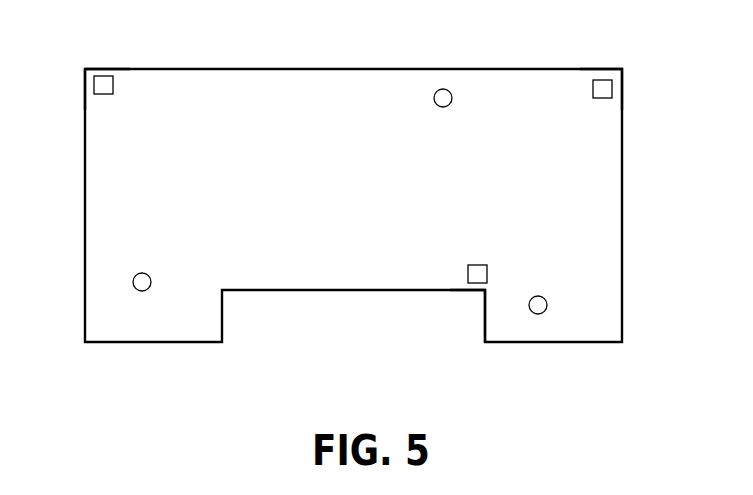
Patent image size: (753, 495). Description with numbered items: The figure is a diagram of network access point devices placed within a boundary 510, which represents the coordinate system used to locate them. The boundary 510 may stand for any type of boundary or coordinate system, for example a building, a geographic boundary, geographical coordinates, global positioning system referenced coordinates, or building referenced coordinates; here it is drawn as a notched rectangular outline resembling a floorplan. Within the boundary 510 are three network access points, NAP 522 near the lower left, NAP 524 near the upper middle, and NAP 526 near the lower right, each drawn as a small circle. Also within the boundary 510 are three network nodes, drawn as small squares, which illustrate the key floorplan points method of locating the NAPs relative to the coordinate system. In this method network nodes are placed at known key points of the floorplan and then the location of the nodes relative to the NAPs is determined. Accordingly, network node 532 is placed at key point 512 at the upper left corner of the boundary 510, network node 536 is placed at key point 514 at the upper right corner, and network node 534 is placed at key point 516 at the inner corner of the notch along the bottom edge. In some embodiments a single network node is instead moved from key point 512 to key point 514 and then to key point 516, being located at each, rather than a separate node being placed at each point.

The boundary 510 is at (623, 225).
The key point 512 is at (84, 77).
The key point 514 is at (611, 65).
The key point 516 is at (477, 294).
The NAP 522 is at (144, 273).
The NAP 524 is at (443, 107).
The NAP 526 is at (546, 299).
The network node 532 is at (104, 95).
The network node 534 is at (466, 278).
The network node 536 is at (592, 88).